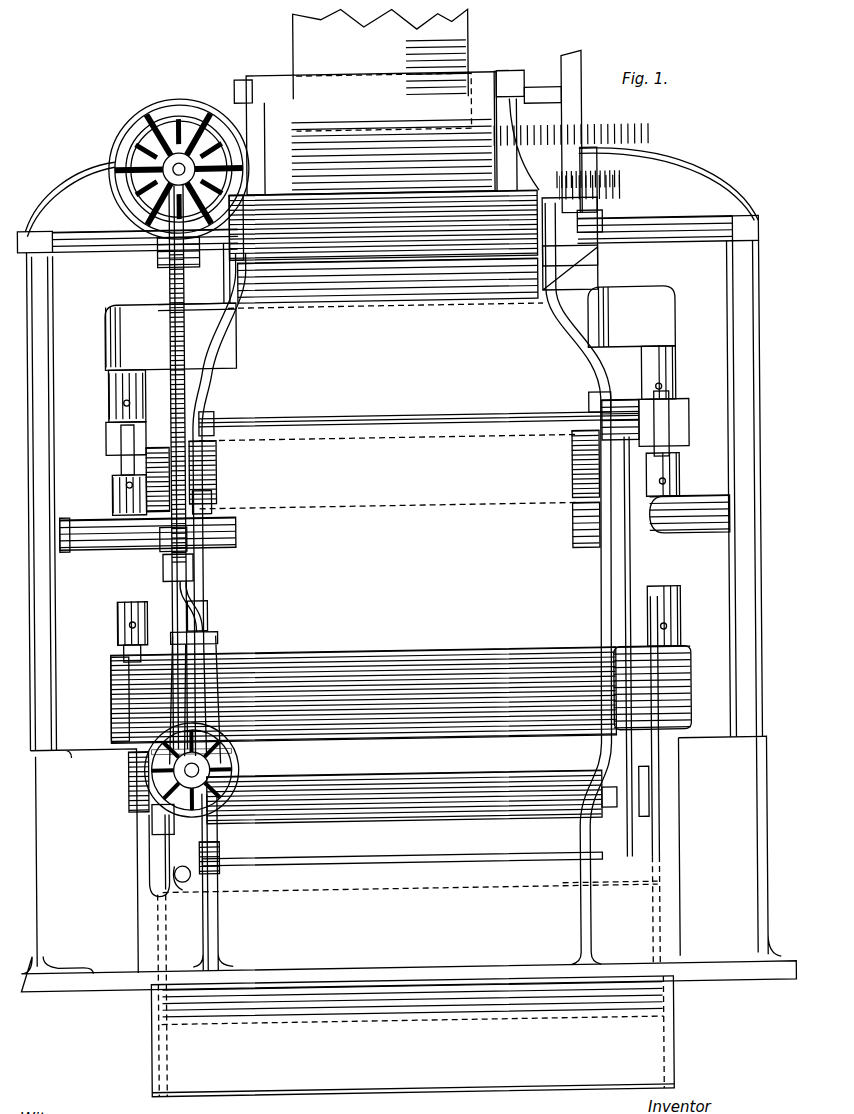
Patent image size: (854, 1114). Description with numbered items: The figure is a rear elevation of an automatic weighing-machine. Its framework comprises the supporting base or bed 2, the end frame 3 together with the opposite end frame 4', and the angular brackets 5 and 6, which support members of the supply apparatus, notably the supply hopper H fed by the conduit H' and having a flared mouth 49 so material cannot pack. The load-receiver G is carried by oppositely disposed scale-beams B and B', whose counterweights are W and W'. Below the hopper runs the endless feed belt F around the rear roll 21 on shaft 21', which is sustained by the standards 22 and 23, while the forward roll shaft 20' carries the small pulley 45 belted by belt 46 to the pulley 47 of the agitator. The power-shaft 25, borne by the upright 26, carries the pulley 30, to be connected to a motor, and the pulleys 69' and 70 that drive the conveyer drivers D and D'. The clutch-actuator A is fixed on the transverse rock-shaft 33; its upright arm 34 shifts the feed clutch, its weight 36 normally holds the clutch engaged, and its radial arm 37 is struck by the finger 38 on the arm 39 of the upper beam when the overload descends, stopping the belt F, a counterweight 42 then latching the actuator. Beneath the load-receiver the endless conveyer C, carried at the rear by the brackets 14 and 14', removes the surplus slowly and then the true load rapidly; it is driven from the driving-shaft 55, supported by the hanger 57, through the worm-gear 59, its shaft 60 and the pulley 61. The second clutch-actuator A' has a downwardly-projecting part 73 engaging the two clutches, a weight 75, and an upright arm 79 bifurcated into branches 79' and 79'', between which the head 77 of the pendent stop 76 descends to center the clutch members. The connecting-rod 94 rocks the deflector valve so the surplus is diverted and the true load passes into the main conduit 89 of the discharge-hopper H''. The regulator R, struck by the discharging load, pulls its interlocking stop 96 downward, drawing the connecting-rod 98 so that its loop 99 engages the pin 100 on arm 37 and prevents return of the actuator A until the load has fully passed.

The supporting base or bed 2 is at (42, 810).
The end frame 3 is at (48, 427).
The frame standard 4' is at (679, 587).
The angular bracket 5 is at (72, 184).
The angular bracket 6 is at (668, 165).
The supporting-bracket 14 is at (210, 770).
The supporting-bracket 14' is at (611, 701).
The shaft of roll 20' is at (590, 243).
The supporting roll or drum 21 is at (148, 468).
The shaft of rear roll 21' is at (602, 209).
The standard 22 is at (200, 478).
The standard 23 is at (578, 522).
The power-shaft 25 is at (175, 168).
The upright 26 is at (190, 287).
The pulley 30 is at (113, 142).
The transverse rock-shaft 33 is at (395, 418).
The upright arm 34 is at (160, 303).
The weight 36 is at (150, 390).
The radial arm 37 is at (590, 402).
The projection or finger 38 is at (678, 393).
The arm 39 is at (678, 423).
The counterweight 42 is at (208, 492).
The small pulley 45 is at (596, 264).
The belt 46 is at (578, 143).
The pulley 47 is at (565, 70).
The flared mouth 49 is at (290, 210).
The driving-shaft 55 is at (170, 768).
The hanger 57 is at (205, 708).
The worm-gear 59 is at (218, 852).
The shaft 60 is at (332, 826).
The pulley 61 is at (180, 880).
The small pulley 69' is at (178, 154).
The pulley 70 is at (135, 127).
The downwardly-projecting part 73 is at (172, 684).
The weight 75 is at (116, 637).
The stop 76 is at (150, 468).
The head 77 is at (160, 530).
The upright or vertical arm 79 is at (219, 606).
The branch 79' is at (211, 533).
The branch 79'' is at (213, 567).
The main conduit 89 is at (315, 1080).
The connecting-rod 94 is at (160, 853).
The interlocking stop 96 is at (647, 812).
The connecting-rod 98 is at (598, 606).
The loop 99 is at (583, 458).
The pin 100 is at (548, 414).
The clutch-actuator A is at (171, 336).
The clutch-actuator A' is at (200, 616).
The scale-beam B is at (118, 443).
The scale-beam B' is at (110, 665).
The endless belt conveyer C is at (382, 780).
The driver D is at (124, 782).
The driver D' is at (138, 808).
The feed carrier or belt F is at (390, 302).
The load-receiver G is at (388, 428).
The supply hopper H is at (365, 133).
The conduit H' is at (398, 69).
The discharge-hopper H'' is at (412, 1036).
The regulator R is at (395, 1022).
The counterweight W is at (220, 416).
The counterweight W' is at (364, 684).